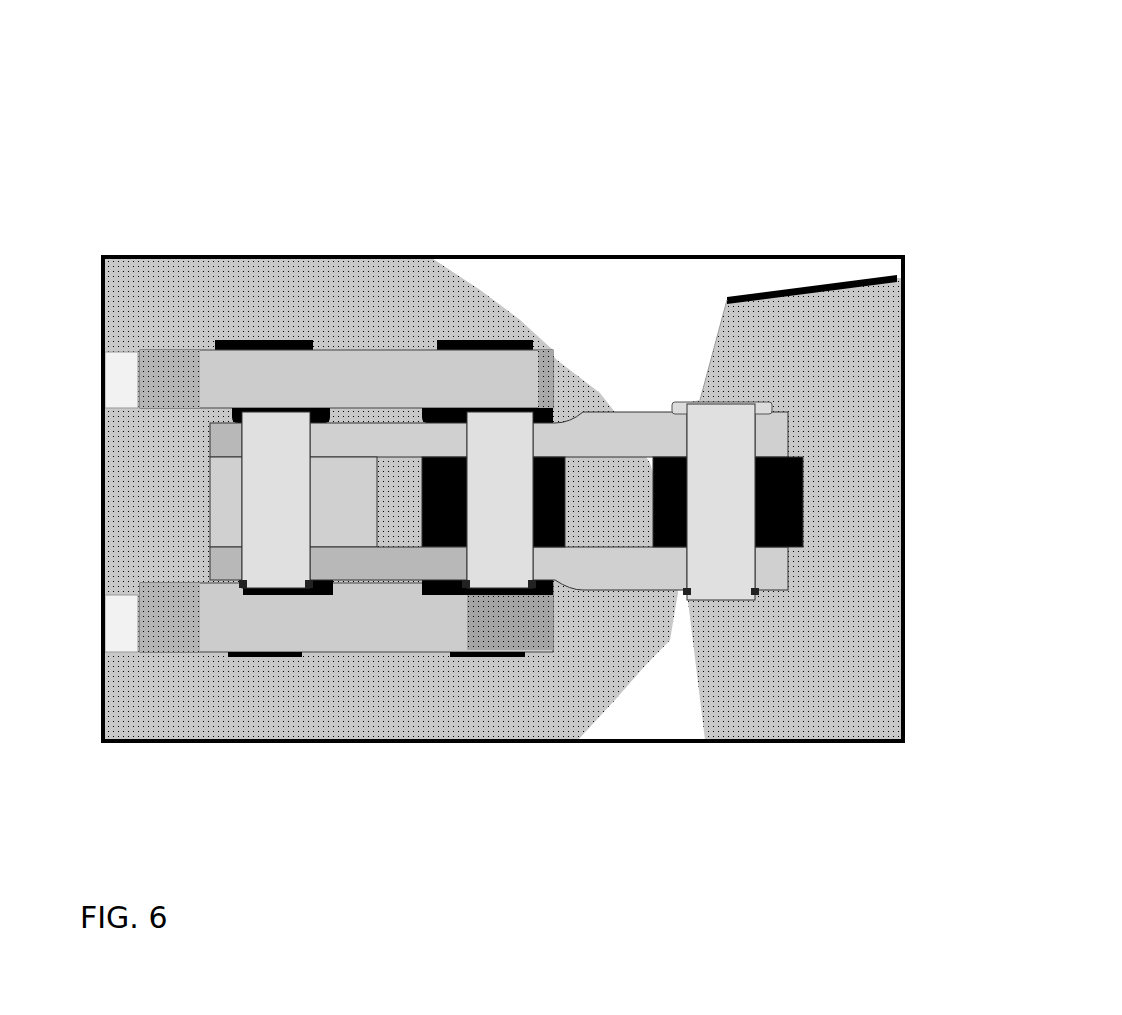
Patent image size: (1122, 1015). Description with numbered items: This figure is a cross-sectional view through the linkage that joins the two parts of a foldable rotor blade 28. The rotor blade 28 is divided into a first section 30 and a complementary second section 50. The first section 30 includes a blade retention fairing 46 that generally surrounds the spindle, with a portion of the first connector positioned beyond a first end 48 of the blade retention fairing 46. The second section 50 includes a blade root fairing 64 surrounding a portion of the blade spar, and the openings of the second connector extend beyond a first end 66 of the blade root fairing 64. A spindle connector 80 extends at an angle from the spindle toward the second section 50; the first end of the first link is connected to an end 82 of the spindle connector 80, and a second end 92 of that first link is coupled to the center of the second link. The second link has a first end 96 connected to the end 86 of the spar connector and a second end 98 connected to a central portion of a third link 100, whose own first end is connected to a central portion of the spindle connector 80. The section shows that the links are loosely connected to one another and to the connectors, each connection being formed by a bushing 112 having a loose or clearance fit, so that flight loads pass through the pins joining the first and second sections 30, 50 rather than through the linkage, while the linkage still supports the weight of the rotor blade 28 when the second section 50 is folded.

The rotor blade 28 is at (782, 64).
The first section 30 is at (267, 745).
The blade retention fairing 46 is at (141, 283).
The first end 48 is at (573, 727).
The second section 50 is at (796, 766).
The blade root fairing 64 is at (873, 313).
The first end 66 is at (715, 330).
The spindle connector 80 is at (347, 383).
The end 82 is at (547, 380).
The end 86 is at (797, 512).
The second end 92 is at (607, 433).
The first end 96 is at (775, 423).
The second end 98 is at (230, 437).
The third link 100 is at (197, 477).
The bushing 112 is at (275, 557).